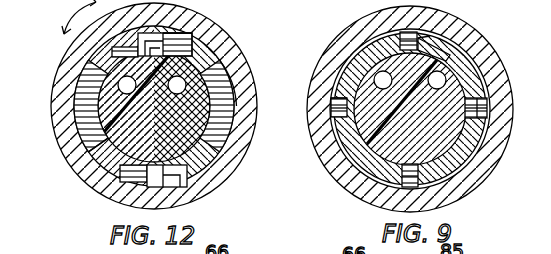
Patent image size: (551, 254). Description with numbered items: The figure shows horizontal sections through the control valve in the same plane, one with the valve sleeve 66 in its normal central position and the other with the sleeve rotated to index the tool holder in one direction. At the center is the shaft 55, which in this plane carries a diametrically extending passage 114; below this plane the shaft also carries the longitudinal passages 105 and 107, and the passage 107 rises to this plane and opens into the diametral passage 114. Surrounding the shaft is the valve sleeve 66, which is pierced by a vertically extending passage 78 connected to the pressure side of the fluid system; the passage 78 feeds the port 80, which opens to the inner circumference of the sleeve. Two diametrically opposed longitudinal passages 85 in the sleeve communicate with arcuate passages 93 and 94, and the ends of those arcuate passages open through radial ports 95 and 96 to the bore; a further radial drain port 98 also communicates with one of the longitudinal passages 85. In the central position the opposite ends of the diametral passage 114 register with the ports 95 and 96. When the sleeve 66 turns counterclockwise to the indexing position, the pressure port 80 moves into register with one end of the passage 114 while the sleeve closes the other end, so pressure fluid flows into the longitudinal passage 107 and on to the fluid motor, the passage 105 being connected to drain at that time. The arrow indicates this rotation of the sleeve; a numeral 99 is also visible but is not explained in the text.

In FIG. 12, the shaft 55 is at (75, 120).
In FIG. 9, the shaft 55 is at (309, 111).
In FIG. 12, the valve sleeve 66 is at (232, 62).
In FIG. 9, the valve sleeve 66 is at (348, 44).
In FIG. 12, the vertically extending passage 78 is at (209, 55).
In FIG. 9, the vertically extending passage 78 is at (492, 110).
In FIG. 12, the port 80 is at (204, 40).
In FIG. 9, the port 80 is at (483, 100).
In FIG. 12, the longitudinal passages 85 is at (112, 58).
In FIG. 9, the longitudinal passages 85 is at (326, 102).
In FIG. 9, the arcuate passage 93 is at (506, 132).
In FIG. 9, the arcuate passage 94 is at (446, 33).
In FIG. 9, the radial port 95 is at (510, 77).
In FIG. 9, the radial port 96 is at (470, 42).
In FIG. 9, the radial port 98 is at (387, 43).
In FIG. 9, the pin 99 is at (476, 170).
In FIG. 12, the longitudinally extending passage 105 is at (118, 85).
In FIG. 9, the longitudinally extending passage 105 is at (375, 74).
In FIG. 12, the longitudinal passage 107 is at (183, 22).
In FIG. 9, the longitudinal passage 107 is at (457, 60).
In FIG. 12, the diametrically extending passage 114 is at (82, 146).
In FIG. 9, the diametrically extending passage 114 is at (333, 135).